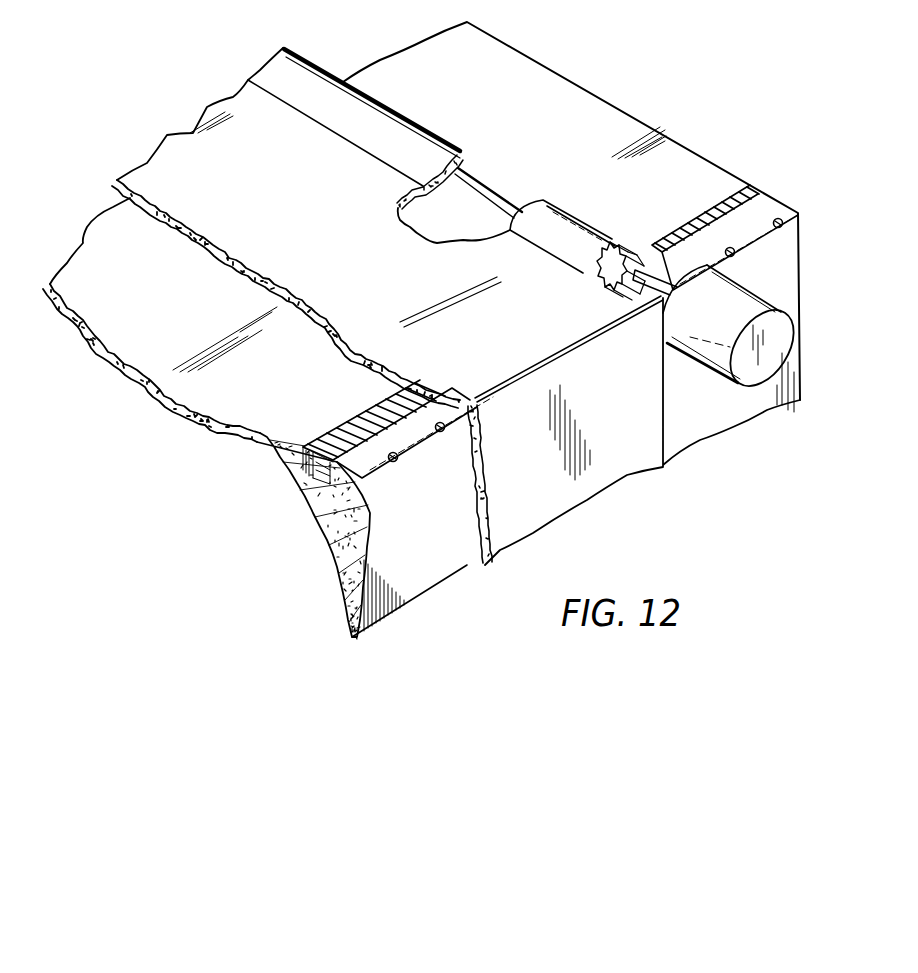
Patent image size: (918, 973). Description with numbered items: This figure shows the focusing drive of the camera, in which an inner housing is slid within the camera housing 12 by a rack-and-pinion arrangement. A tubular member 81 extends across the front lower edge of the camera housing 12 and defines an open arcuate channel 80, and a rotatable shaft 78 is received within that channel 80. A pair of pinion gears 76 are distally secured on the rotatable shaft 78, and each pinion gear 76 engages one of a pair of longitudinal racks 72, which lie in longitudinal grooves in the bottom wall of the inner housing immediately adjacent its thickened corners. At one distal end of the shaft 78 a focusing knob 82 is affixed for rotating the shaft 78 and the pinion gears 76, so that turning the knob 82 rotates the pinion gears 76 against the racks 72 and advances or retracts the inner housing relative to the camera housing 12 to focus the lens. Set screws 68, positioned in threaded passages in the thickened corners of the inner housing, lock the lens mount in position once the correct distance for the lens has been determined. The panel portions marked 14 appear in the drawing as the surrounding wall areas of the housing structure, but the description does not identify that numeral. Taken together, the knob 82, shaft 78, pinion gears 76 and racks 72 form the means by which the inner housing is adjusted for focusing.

The camera housing 12 is at (312, 187).
The panel 14 is at (551, 106).
The set screws 68 is at (396, 461).
The longitudinal racks 72 is at (763, 197).
The pinion gears 76 is at (628, 242).
The rotatable shaft 78 is at (518, 200).
The open arcuate channel 80 is at (458, 174).
The tubular member 81 is at (400, 122).
The focusing knob 82 is at (747, 388).